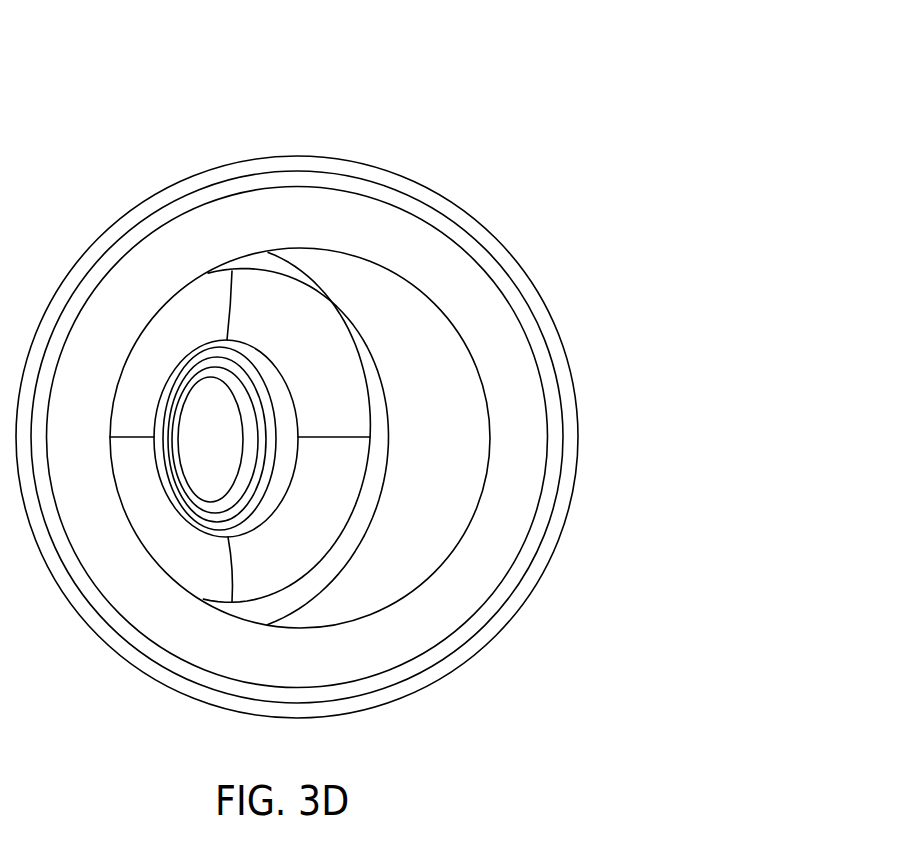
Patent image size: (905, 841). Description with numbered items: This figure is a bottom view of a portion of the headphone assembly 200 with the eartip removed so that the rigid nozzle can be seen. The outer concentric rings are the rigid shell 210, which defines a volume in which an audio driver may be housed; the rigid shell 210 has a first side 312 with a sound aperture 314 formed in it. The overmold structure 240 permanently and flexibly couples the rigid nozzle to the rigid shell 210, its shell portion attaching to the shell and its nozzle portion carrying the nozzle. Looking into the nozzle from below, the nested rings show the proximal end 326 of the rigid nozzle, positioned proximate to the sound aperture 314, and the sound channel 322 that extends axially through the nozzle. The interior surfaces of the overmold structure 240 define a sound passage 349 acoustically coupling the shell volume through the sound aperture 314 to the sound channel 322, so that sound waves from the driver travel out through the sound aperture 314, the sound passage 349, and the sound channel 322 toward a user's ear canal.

The headphone assembly 200 is at (512, 92).
The rigid shell 210 is at (452, 507).
The overmold structure 240 is at (282, 318).
The first side 312 is at (453, 414).
The sound aperture 314 is at (342, 427).
The sound channel 322 is at (221, 456).
The proximal end 326 is at (202, 363).
The sound passage 349 is at (285, 453).